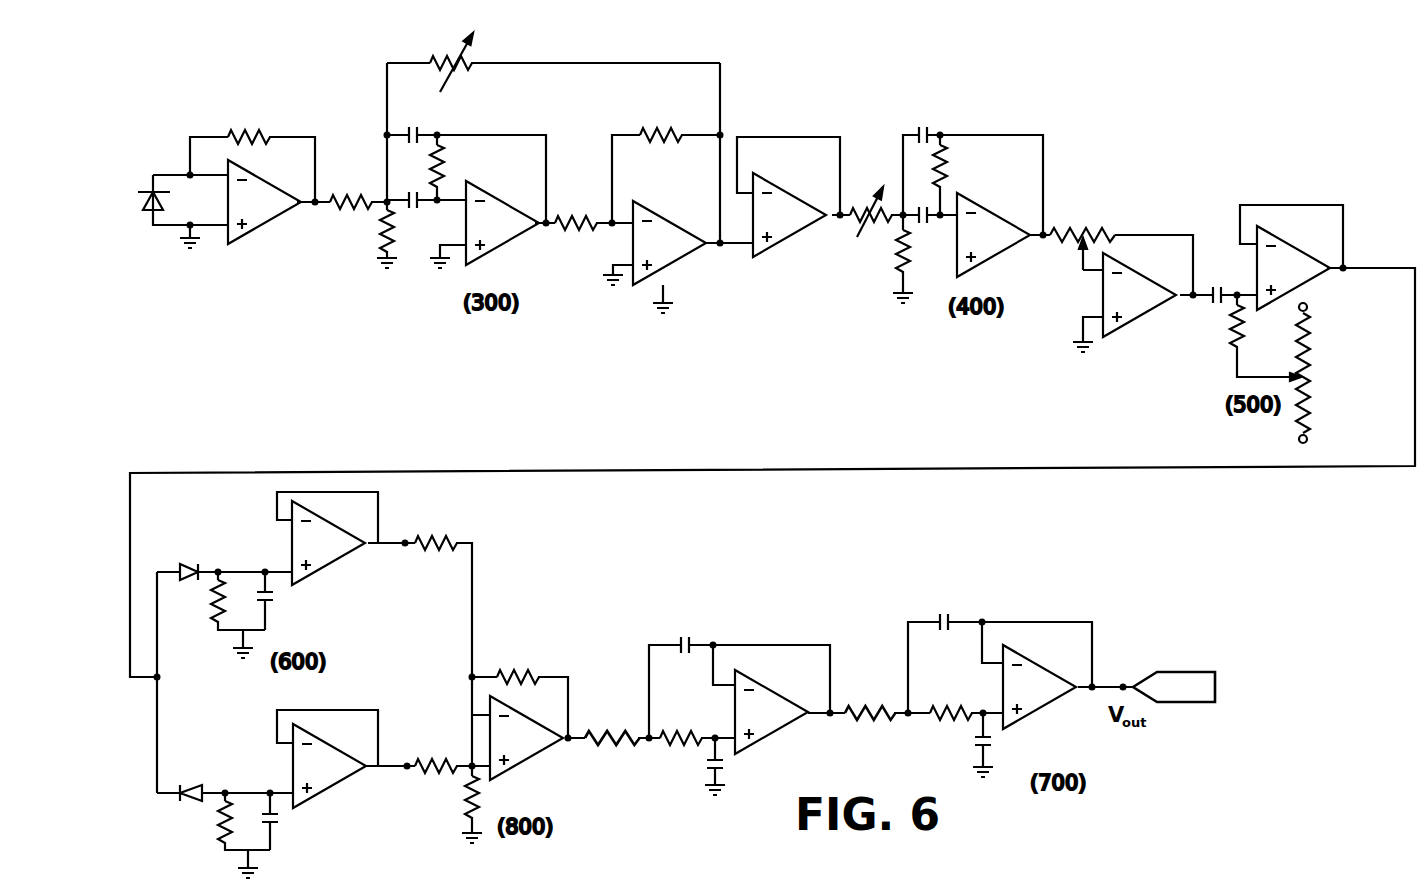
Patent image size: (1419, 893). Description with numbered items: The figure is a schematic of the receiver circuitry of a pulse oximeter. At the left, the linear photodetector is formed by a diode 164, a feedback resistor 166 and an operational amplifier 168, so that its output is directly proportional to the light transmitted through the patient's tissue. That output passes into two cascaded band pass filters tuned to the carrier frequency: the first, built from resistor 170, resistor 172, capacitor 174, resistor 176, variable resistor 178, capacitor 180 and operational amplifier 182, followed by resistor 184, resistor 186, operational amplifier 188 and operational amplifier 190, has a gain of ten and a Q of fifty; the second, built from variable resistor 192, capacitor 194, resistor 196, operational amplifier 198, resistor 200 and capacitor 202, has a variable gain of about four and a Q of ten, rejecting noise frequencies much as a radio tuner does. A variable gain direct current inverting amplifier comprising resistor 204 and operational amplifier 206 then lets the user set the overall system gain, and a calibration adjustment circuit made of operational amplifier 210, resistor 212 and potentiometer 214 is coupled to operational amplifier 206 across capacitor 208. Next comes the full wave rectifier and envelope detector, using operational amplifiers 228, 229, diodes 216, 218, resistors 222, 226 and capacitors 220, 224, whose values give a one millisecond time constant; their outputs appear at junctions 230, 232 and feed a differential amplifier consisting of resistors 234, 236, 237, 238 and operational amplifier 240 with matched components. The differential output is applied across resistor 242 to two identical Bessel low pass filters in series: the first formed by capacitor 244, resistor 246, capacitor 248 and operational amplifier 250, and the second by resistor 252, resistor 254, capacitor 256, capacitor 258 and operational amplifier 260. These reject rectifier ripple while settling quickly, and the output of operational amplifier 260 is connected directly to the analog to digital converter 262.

The diode 164 is at (140, 193).
The resistor 166 is at (243, 134).
The operational amplifier 168 is at (274, 222).
The resistor 170 is at (383, 231).
The resistor 172 is at (350, 200).
The capacitor 174 is at (419, 130).
The resistor 176 is at (444, 166).
The variable resistor 178 is at (441, 61).
The capacitor 180 is at (418, 206).
The operational amplifier 182 is at (509, 238).
The resistor 184 is at (578, 218).
The resistor 186 is at (651, 130).
The operational amplifier 188 is at (685, 256).
The operational amplifier 190 is at (797, 234).
The variable resistor 192 is at (858, 205).
The capacitor 194 is at (930, 131).
The resistor 196 is at (947, 170).
The operational amplifier 198 is at (995, 256).
The resistor 200 is at (900, 242).
The capacitor 202 is at (927, 224).
The resistor 204 is at (1097, 215).
The operational amplifier 206 is at (1147, 313).
The capacitor 208 is at (1216, 303).
The operational amplifier 210 is at (1300, 253).
The resistor 212 is at (1232, 345).
The potentiometer 214 is at (1310, 377).
The diode 216 is at (193, 567).
The diode 218 is at (192, 787).
The capacitor 220 is at (270, 600).
The resistor 222 is at (215, 598).
The capacitor 224 is at (276, 822).
The resistor 226 is at (222, 820).
The operational amplifier 228 is at (344, 780).
The operational amplifier 229 is at (346, 556).
The junction node 230 is at (405, 547).
The junction node 232 is at (407, 772).
The resistor 234 is at (432, 541).
The resistor 236 is at (444, 762).
The resistor 237 is at (478, 795).
The resistor 238 is at (519, 673).
The operational amplifier 240 is at (547, 749).
The resistor 242 is at (600, 746).
The capacitor 244 is at (690, 640).
The resistor 246 is at (671, 747).
The capacitor 248 is at (722, 770).
The operational amplifier 250 is at (787, 728).
The resistor 252 is at (852, 721).
The resistor 254 is at (952, 722).
The capacitor 256 is at (950, 621).
The capacitor 258 is at (990, 748).
The operational amplifier 260 is at (1055, 702).
The analog to digital converter 262 is at (1152, 673).